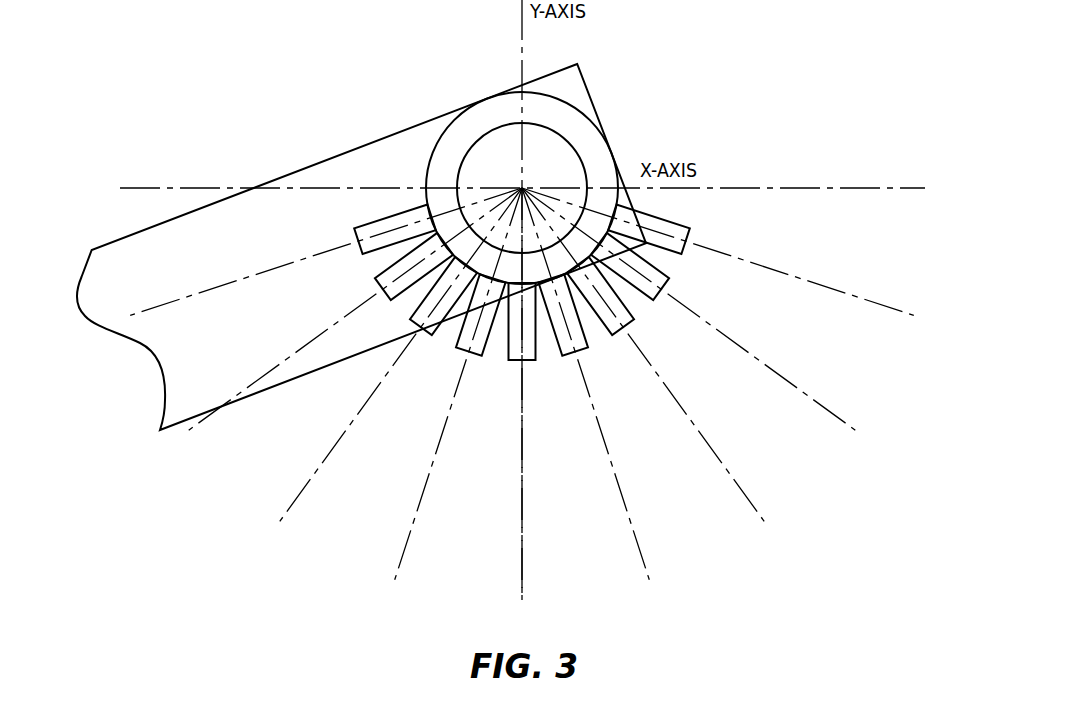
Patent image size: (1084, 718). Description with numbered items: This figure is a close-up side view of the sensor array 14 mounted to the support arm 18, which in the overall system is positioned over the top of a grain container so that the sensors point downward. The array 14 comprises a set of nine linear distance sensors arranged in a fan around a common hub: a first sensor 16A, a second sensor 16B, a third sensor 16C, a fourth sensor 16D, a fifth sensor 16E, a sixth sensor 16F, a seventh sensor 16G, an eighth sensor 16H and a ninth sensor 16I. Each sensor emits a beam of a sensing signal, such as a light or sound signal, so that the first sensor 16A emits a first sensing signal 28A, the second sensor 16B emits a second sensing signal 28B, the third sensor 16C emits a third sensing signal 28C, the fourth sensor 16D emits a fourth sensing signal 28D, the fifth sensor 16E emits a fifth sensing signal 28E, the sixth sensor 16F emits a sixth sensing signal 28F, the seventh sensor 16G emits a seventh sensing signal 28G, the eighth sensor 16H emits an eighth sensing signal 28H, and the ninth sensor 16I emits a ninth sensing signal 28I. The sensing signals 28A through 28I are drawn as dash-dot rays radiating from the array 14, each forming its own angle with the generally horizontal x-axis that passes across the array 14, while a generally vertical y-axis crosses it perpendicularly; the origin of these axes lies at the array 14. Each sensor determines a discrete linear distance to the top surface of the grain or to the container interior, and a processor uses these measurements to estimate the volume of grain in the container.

The sensor array 14 is at (466, 90).
The support arm 18 is at (362, 142).
The first sensor 16A is at (648, 213).
The second sensor 16B is at (668, 278).
The third sensor 16C is at (632, 318).
The fourth sensor 16D is at (587, 345).
The fifth sensor 16E is at (530, 362).
The sixth sensor 16F is at (463, 348).
The seventh sensor 16G is at (423, 323).
The eighth sensor 16H is at (383, 282).
The ninth sensor 16I is at (390, 215).
The first sensing signal 28A is at (834, 288).
The second sensing signal 28B is at (791, 381).
The third sensing signal 28C is at (718, 454).
The fourth sensing signal 28D is at (626, 501).
The fifth sensing signal 28E is at (524, 518).
The sixth sensing signal 28F is at (418, 501).
The seventh sensing signal 28G is at (326, 454).
The eighth sensing signal 28H is at (253, 381).
The ninth sensing signal 28I is at (207, 288).